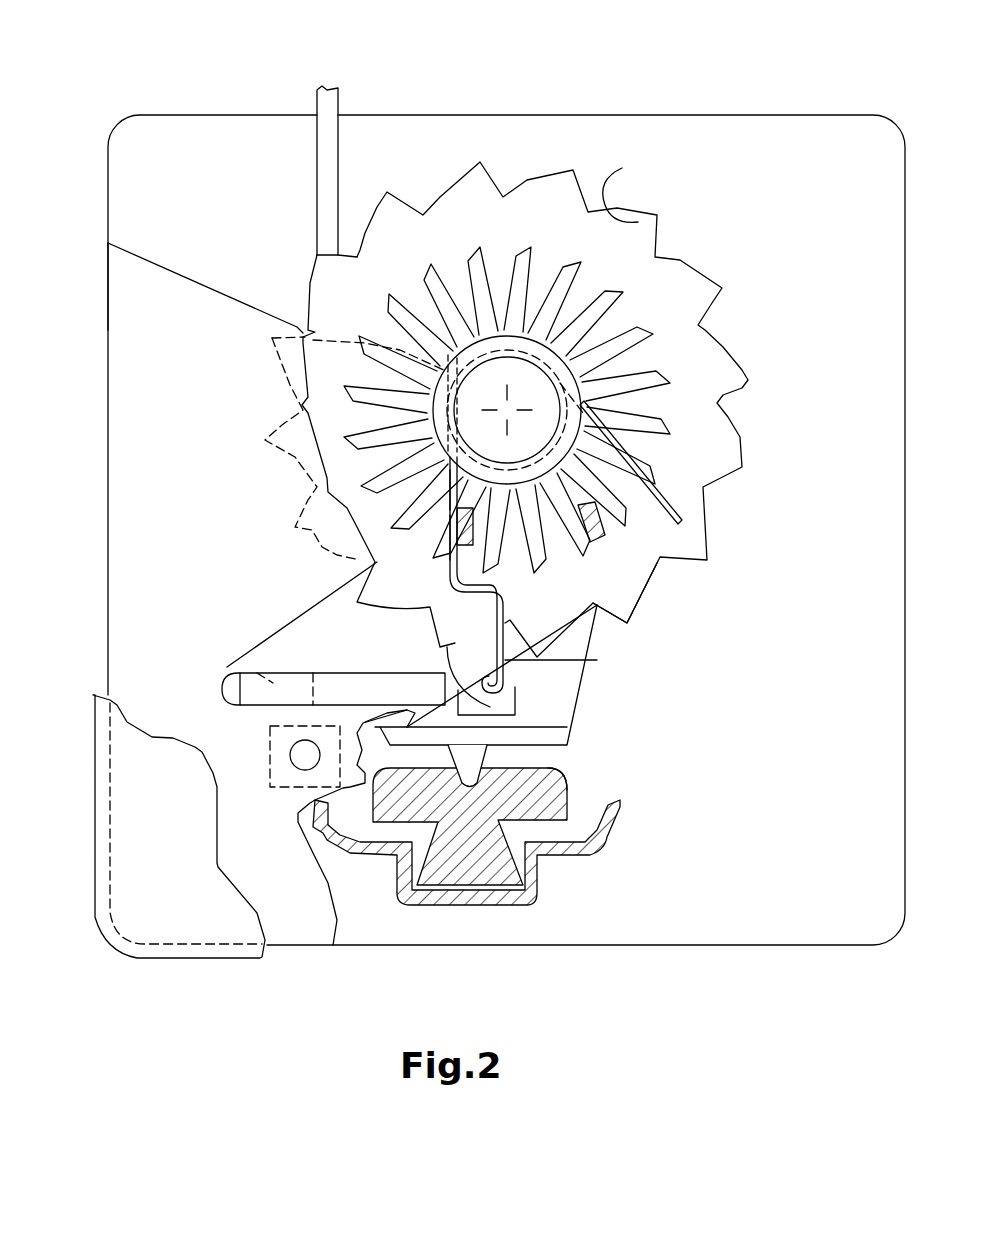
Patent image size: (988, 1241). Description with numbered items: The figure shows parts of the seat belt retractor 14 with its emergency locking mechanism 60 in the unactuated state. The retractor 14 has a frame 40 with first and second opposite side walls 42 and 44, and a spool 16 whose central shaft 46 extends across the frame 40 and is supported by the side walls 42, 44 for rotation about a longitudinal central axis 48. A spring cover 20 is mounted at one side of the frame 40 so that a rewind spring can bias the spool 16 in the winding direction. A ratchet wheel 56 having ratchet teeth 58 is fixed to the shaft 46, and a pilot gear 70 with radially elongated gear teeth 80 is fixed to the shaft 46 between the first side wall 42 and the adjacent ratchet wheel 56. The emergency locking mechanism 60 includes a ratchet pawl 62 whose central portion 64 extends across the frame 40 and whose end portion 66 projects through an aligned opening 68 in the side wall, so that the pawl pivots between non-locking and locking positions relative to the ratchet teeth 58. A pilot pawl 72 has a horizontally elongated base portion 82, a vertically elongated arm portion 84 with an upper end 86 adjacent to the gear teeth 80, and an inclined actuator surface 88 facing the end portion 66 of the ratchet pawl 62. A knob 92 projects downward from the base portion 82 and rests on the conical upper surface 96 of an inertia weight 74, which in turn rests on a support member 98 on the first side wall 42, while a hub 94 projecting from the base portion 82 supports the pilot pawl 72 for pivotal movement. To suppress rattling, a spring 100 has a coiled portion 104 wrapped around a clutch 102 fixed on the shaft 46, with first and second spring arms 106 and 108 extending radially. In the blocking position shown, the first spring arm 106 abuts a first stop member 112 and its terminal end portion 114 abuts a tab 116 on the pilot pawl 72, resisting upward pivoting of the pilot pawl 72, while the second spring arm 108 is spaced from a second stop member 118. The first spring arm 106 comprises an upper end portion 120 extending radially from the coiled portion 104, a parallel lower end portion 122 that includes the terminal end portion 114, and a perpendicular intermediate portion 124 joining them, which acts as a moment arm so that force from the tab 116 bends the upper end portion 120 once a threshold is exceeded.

The retractor 14 is at (88, 108).
The spool 16 is at (305, 284).
The spring cover 20 is at (153, 795).
The frame 40 is at (104, 323).
The first side wall 42 is at (150, 415).
The second side wall 44 is at (192, 165).
The central shaft 46 is at (507, 410).
The longitudinal central axis 48 is at (272, 340).
The ratchet wheel 56 is at (460, 230).
The ratchet teeth 58 is at (563, 185).
The emergency locking mechanism 60 is at (719, 690).
The ratchet pawl 62 is at (325, 671).
The central portion 64 is at (247, 667).
The end portion 66 is at (372, 685).
The opening 68 is at (303, 608).
The pilot gear 70 is at (662, 335).
The pilot pawl 72 is at (585, 687).
The inertia weight 74 is at (570, 797).
The gear teeth 80 is at (660, 427).
The base portion 82 is at (552, 735).
The arm portion 84 is at (598, 660).
The upper end 86 is at (593, 605).
The actuator surface 88 is at (430, 708).
The knob 92 is at (468, 765).
The hub 94 is at (305, 755).
The conical upper surface 96 is at (522, 767).
The support member 98 is at (605, 848).
The spring 100 is at (442, 413).
The clutch 102 is at (569, 343).
The coiled portion 104 is at (563, 438).
The first spring arm 106 is at (450, 495).
The second spring arm 108 is at (673, 515).
The first stop member 112 is at (460, 527).
The terminal end portion 114 is at (497, 693).
The tab 116 is at (452, 645).
The second stop member 118 is at (603, 537).
The upper end portion 120 is at (450, 530).
The lower end portion 122 is at (573, 673).
The intermediate portion 124 is at (448, 580).